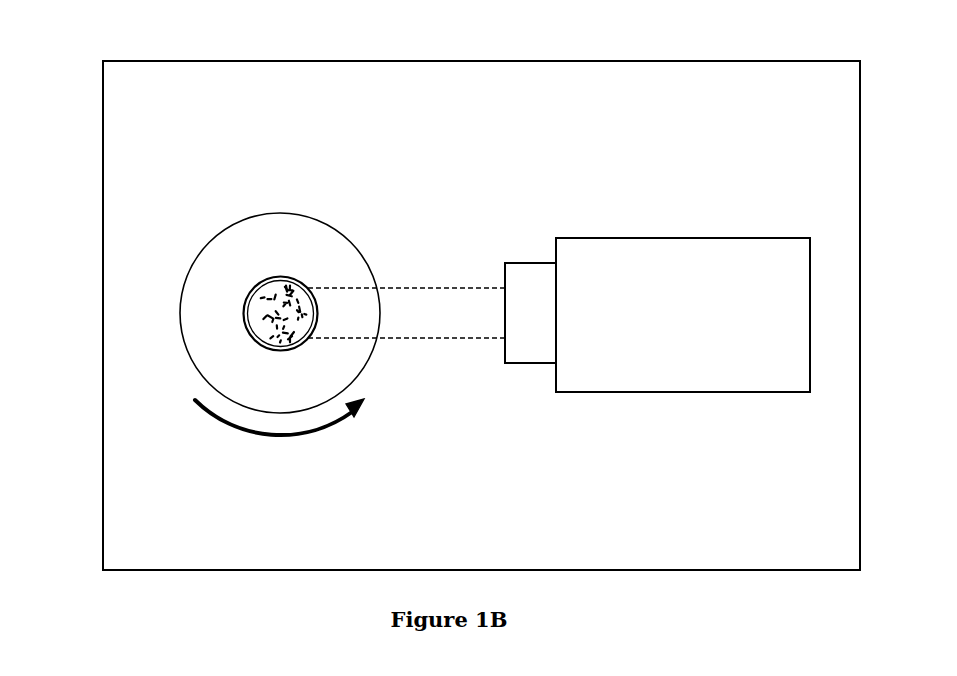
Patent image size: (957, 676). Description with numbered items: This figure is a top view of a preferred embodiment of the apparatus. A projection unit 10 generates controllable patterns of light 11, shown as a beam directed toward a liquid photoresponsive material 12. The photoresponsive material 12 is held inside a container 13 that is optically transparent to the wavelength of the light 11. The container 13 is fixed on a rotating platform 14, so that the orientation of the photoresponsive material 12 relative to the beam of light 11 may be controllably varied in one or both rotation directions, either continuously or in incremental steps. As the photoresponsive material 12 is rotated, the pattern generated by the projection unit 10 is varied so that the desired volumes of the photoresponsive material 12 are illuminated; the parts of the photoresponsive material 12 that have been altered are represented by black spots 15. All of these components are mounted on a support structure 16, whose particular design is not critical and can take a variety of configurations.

The projection unit 10 is at (619, 292).
The light 11 is at (430, 286).
The photoresponsive material 12 is at (252, 301).
The container 13 is at (247, 313).
The rotating platform 14 is at (218, 371).
The black spots 15 is at (270, 297).
The support structure 16 is at (152, 498).